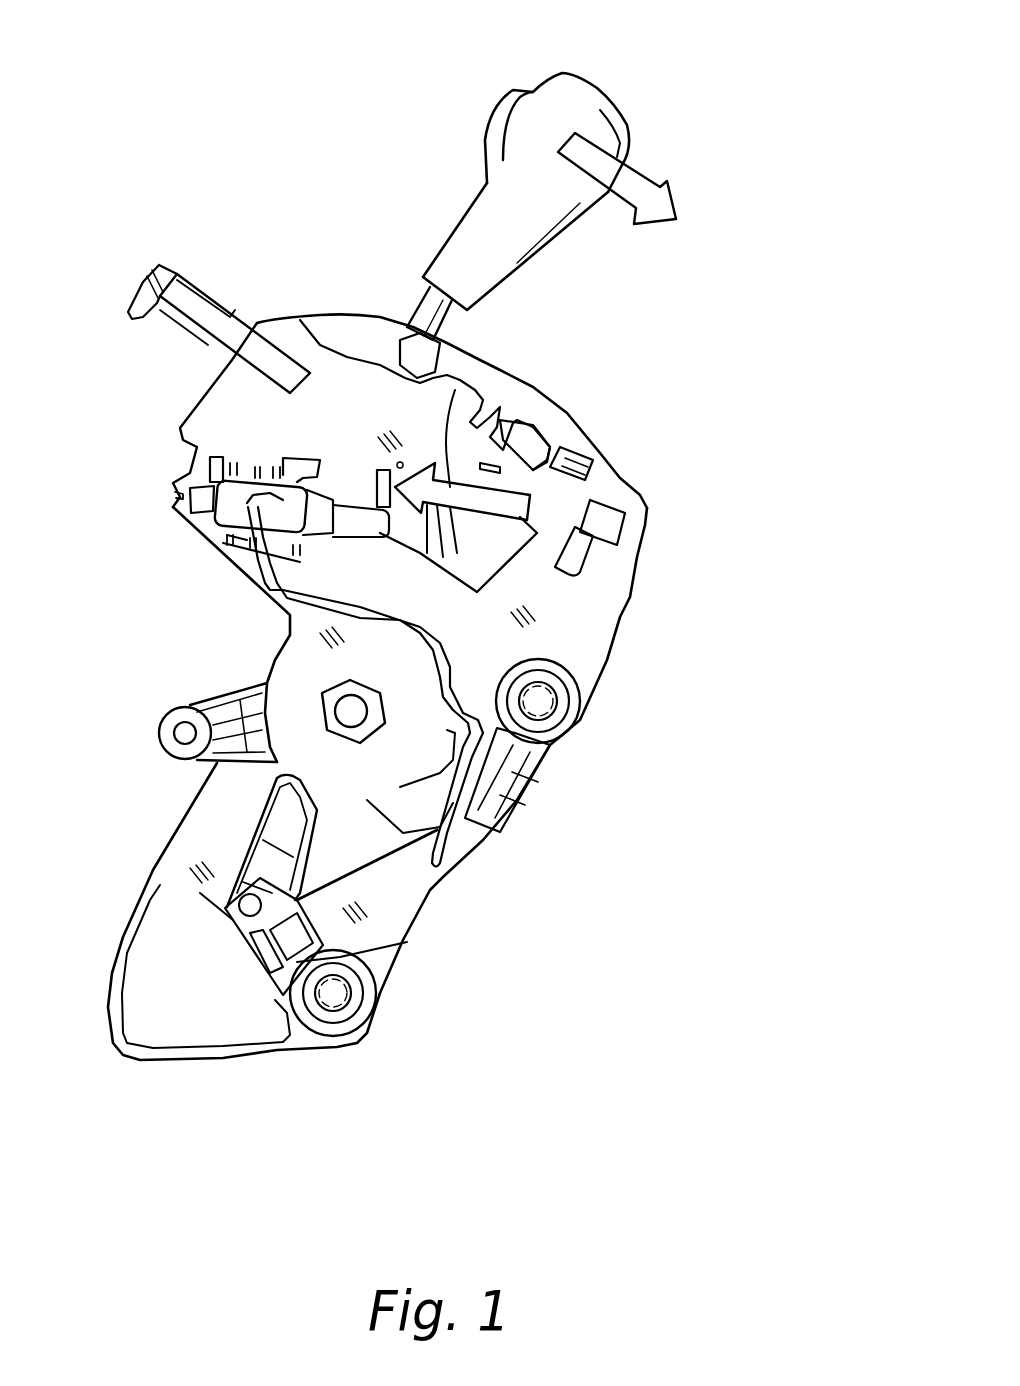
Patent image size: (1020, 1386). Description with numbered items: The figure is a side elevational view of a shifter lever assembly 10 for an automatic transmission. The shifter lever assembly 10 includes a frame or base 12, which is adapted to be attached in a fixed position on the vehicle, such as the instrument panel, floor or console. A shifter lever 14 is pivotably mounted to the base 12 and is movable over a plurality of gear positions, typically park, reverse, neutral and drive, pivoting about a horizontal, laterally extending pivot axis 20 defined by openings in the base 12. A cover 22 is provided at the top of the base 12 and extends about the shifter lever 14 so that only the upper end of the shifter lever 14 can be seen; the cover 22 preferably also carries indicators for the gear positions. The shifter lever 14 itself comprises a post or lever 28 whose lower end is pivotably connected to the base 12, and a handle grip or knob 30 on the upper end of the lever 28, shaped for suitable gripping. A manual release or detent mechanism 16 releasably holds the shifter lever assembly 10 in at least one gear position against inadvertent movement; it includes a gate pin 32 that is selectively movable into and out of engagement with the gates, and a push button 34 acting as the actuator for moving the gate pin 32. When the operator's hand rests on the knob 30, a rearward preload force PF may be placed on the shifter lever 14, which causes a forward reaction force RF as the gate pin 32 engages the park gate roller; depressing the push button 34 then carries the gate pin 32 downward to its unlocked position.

The shifter lever assembly 10 is at (613, 954).
The base 12 is at (641, 579).
The shifter lever 14 is at (449, 231).
The manual release or detent mechanism 16 is at (497, 102).
The pivot axis 20 is at (280, 660).
The cover 22 is at (533, 397).
The lever 28 is at (418, 300).
The knob 30 is at (597, 87).
The gate pin 32 is at (315, 445).
The push button 34 is at (517, 88).
The preload force PF is at (627, 197).
The reaction force RF is at (455, 400).